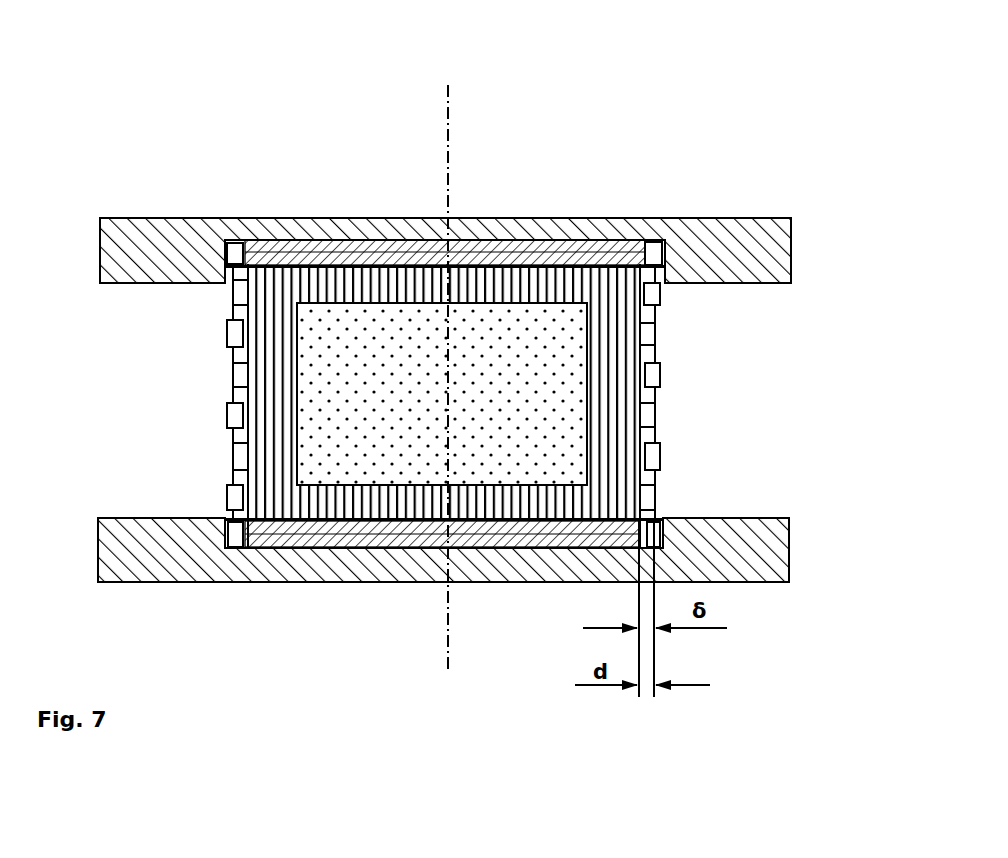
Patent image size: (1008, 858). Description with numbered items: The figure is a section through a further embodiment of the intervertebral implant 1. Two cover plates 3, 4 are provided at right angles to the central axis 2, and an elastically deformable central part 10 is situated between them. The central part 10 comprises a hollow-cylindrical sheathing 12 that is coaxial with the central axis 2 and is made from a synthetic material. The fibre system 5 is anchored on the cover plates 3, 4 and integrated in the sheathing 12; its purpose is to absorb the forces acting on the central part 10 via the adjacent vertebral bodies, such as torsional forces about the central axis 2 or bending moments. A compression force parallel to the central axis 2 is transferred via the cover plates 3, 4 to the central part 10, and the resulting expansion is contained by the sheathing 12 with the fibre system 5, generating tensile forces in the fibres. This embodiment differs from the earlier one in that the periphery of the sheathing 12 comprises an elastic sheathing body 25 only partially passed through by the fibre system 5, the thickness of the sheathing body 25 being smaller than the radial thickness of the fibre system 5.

The intervertebral implant 1 is at (148, 188).
The central axis 2 is at (449, 120).
The cover plate 3 is at (365, 540).
The cover plate 4 is at (362, 246).
The fibre system 5 is at (233, 373).
The central part 10 is at (760, 392).
The sheathing 12 is at (660, 356).
The elastic sheathing body 25 is at (236, 316).